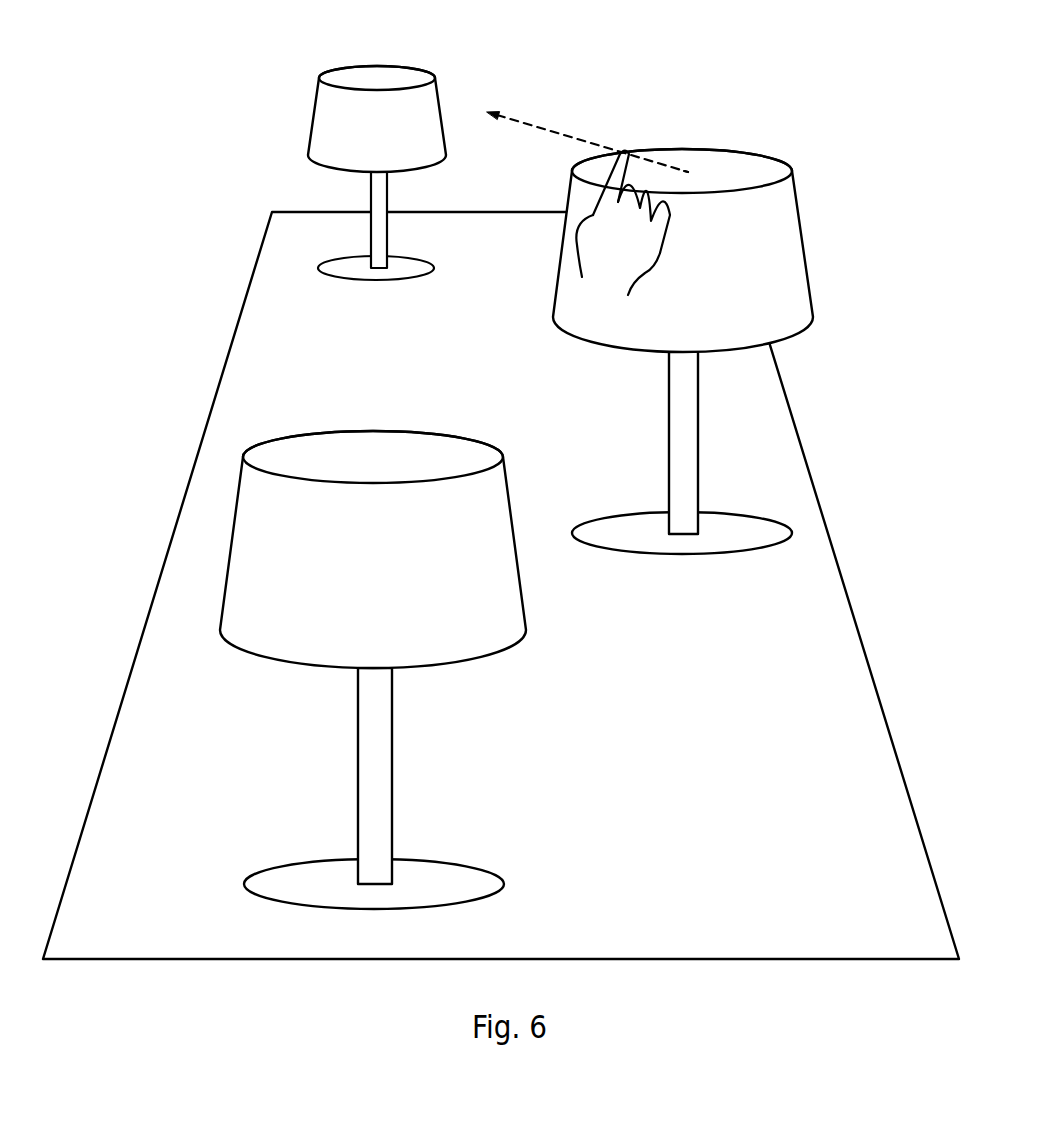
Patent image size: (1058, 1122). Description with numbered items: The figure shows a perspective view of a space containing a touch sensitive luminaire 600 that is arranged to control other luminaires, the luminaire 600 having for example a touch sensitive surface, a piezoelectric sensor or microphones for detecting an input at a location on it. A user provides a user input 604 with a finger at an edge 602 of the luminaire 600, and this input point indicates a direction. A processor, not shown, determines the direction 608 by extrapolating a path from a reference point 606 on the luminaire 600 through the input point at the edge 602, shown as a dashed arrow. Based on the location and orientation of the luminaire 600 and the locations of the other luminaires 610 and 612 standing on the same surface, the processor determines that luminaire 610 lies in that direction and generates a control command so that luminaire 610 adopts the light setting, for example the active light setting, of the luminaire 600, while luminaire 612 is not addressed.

The touch sensitive luminaire 600 is at (793, 297).
The edge of the luminaire 602 is at (622, 150).
The user input 604 is at (628, 258).
The reference point 606 is at (688, 172).
The direction 608 is at (542, 128).
The luminaire 610 is at (395, 158).
The luminaire 612 is at (488, 620).